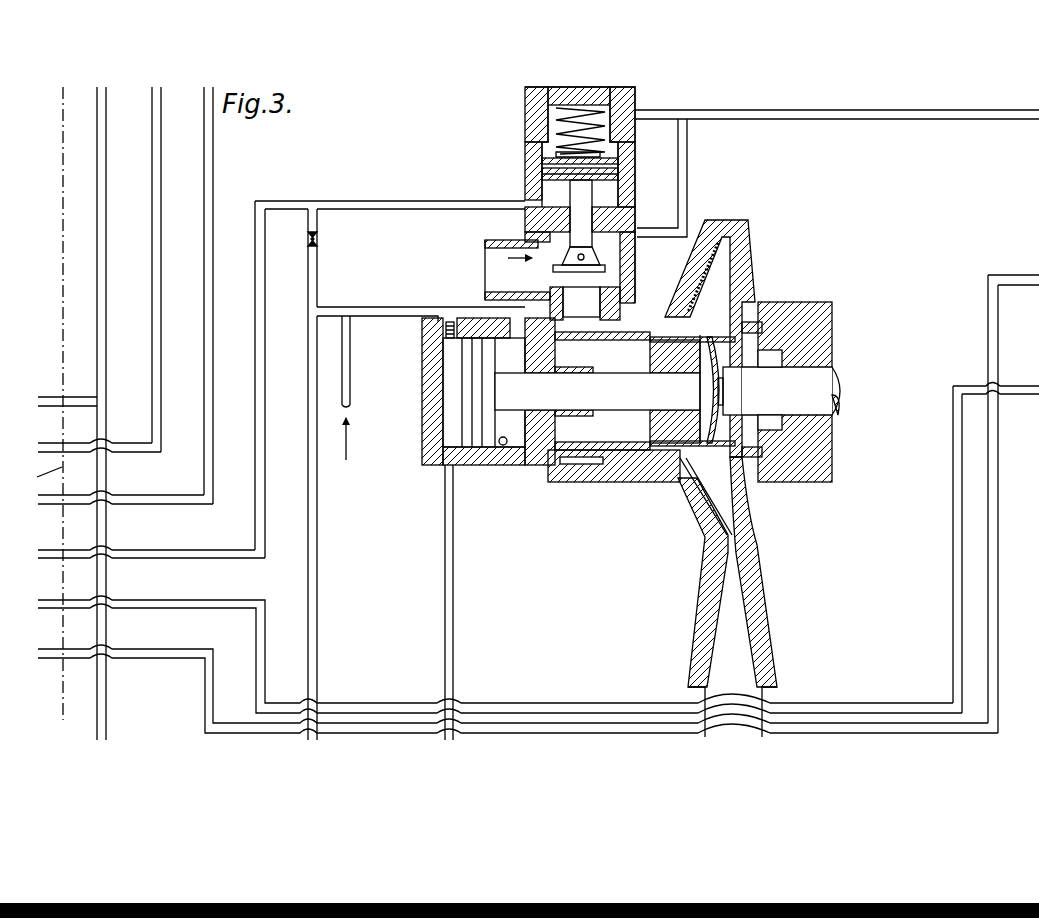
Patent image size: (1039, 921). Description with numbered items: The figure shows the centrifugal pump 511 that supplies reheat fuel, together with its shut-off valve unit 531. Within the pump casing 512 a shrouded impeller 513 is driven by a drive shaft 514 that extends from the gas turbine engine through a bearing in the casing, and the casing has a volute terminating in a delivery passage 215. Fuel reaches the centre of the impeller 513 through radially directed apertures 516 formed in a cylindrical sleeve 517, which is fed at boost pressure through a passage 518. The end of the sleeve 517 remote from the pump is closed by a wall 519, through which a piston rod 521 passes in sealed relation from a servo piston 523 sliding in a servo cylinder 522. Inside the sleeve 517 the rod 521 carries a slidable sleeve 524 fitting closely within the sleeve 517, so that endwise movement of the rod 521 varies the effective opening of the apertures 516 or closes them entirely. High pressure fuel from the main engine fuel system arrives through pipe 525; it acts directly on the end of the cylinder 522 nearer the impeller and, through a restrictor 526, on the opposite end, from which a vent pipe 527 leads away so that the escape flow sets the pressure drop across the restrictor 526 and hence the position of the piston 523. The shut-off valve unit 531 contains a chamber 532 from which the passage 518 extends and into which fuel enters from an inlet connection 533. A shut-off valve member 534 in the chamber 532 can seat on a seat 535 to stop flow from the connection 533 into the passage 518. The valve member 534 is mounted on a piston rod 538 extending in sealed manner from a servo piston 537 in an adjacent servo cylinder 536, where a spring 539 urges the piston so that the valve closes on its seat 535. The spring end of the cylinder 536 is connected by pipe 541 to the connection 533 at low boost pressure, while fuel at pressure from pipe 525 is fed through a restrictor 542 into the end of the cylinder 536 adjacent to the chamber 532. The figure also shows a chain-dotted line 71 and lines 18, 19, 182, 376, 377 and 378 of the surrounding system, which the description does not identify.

The engine center line 71 is at (66, 286).
The fuel line 182 is at (98, 378).
The fuel line 19 is at (157, 423).
The fuel line 18 is at (210, 478).
The pressure line 376 is at (206, 557).
The pressure line 377 is at (147, 603).
The pressure line 378 is at (143, 653).
The chamber 532 is at (550, 237).
The restrictor 542 is at (320, 239).
The pipe 525 is at (378, 314).
The vent pipe 527 is at (452, 678).
The shut-off valve unit 531 is at (515, 160).
The spring 539 is at (560, 114).
The servo cylinder 536 is at (544, 160).
The servo piston 537 is at (544, 172).
The piston rod 538 is at (583, 200).
The shut-off valve member 534 is at (604, 268).
The inlet connection 533 is at (492, 253).
The seat 535 is at (556, 290).
The passage 518 is at (595, 311).
The pipe 541 is at (652, 118).
The servo cylinder 522 is at (505, 440).
The restrictor 526 is at (445, 328).
The servo piston 523 is at (477, 343).
The wall 519 is at (536, 432).
The cylindrical sleeve 517 is at (657, 452).
The slidable sleeve 524 is at (654, 343).
The piston rod 521 is at (630, 404).
The centrifugal pump 511 is at (739, 215).
The pump casing 512 is at (747, 279).
The shrouded impeller 513 is at (727, 263).
The drive shaft 514 is at (825, 387).
The radially directed apertures 516 is at (710, 473).
The delivery passage 215 is at (753, 692).